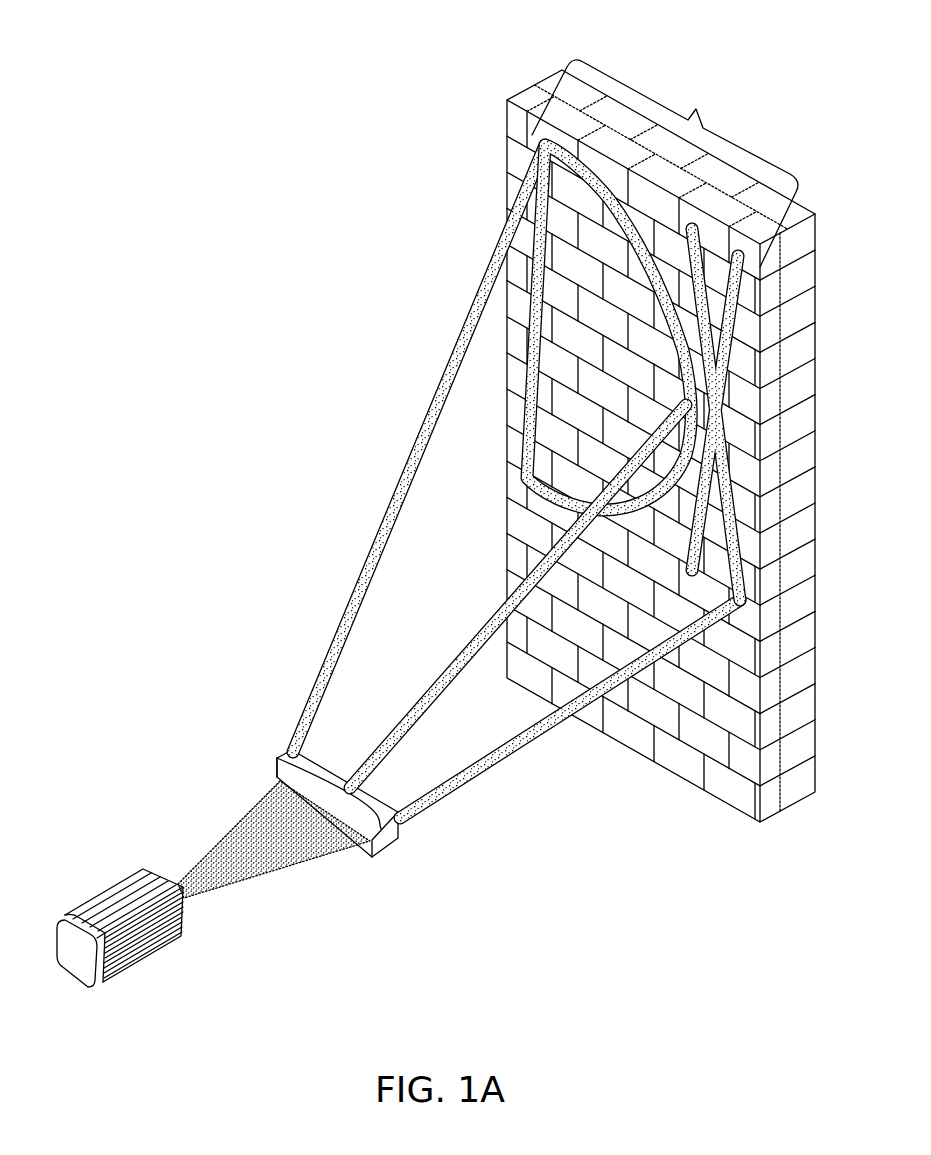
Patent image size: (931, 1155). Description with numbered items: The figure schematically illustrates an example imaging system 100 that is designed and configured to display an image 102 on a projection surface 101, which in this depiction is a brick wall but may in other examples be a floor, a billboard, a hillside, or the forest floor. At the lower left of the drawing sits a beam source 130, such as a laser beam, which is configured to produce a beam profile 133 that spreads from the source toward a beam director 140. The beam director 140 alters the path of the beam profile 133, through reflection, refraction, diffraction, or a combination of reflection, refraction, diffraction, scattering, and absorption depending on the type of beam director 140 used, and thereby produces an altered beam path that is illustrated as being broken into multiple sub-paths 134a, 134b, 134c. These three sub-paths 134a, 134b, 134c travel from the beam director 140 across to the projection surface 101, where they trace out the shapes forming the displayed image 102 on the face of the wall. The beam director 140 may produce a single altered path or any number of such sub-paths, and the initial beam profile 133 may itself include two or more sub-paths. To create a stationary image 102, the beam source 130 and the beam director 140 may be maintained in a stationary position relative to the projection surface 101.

The imaging system 100 is at (131, 84).
The projection surface 101 is at (507, 120).
The image 102 is at (665, 163).
The beam source 130 is at (128, 877).
The beam profile 133 is at (238, 822).
The beam director 140 is at (393, 803).
The sub-path 134a is at (383, 545).
The sub-path 134b is at (462, 658).
The sub-path 134c is at (483, 769).